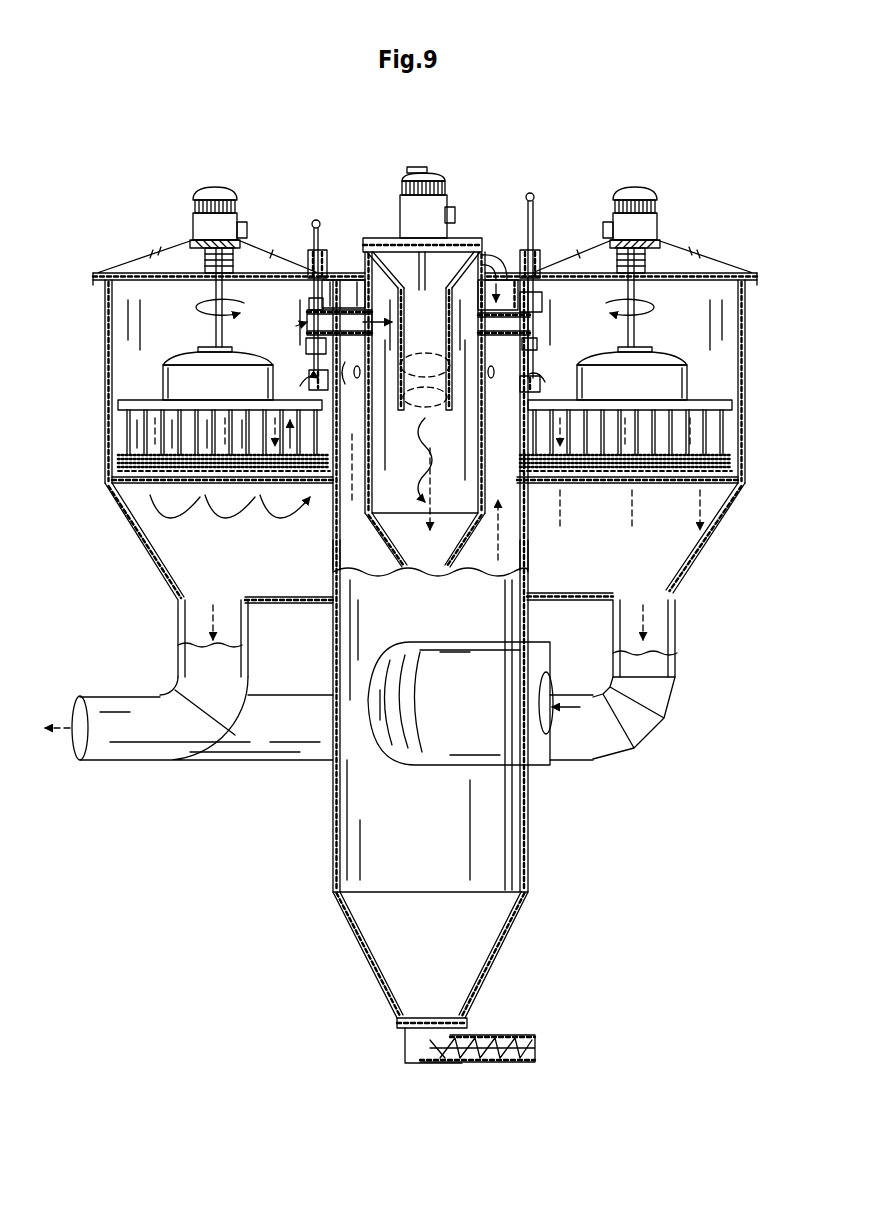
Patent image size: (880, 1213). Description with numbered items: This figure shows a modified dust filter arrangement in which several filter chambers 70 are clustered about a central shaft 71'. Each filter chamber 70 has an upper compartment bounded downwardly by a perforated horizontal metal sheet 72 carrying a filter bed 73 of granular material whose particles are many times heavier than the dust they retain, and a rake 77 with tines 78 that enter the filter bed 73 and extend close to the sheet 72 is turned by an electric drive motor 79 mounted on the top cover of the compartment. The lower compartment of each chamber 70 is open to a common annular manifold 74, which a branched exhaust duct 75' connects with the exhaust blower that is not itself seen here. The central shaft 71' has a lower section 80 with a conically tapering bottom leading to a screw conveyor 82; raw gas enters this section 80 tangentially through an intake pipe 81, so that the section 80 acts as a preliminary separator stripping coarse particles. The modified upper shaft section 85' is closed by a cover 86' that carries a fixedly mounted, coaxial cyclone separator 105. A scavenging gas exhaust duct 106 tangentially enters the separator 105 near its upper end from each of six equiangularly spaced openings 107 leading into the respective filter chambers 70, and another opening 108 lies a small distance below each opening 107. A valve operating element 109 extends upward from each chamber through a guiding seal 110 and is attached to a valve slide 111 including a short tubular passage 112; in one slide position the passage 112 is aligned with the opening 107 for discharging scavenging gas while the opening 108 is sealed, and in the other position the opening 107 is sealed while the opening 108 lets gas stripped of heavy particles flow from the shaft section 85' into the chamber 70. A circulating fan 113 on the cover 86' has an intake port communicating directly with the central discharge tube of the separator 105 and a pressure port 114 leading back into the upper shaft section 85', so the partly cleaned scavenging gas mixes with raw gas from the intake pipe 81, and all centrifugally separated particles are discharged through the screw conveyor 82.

The filter chamber 70 is at (108, 334).
The central shaft 71' is at (410, 558).
The perforated horizontal metal sheet 72 is at (190, 478).
The filter bed 73 is at (241, 478).
The common manifold 74 is at (170, 565).
The branched exhaust duct 75' is at (189, 743).
The rake 77 is at (218, 400).
The tines 78 is at (118, 425).
The electric drive motor 79 is at (212, 188).
The lower section 80 is at (343, 857).
The intake pipe 81 is at (538, 667).
The screw conveyor 82 is at (498, 1040).
The upper shaft section 85' is at (418, 461).
The cover 86' is at (343, 258).
The cyclone separator 105 is at (378, 548).
The scavenging gas exhaust duct 106 is at (350, 312).
The opening 107 is at (515, 324).
The opening 108 is at (314, 381).
The valve operating element 109 is at (314, 221).
The guiding seal 110 is at (536, 262).
The valve slide 111 is at (312, 302).
The short tubular passage 112 is at (310, 338).
The circulating fan 113 is at (380, 240).
The pressure port 114 is at (495, 262).